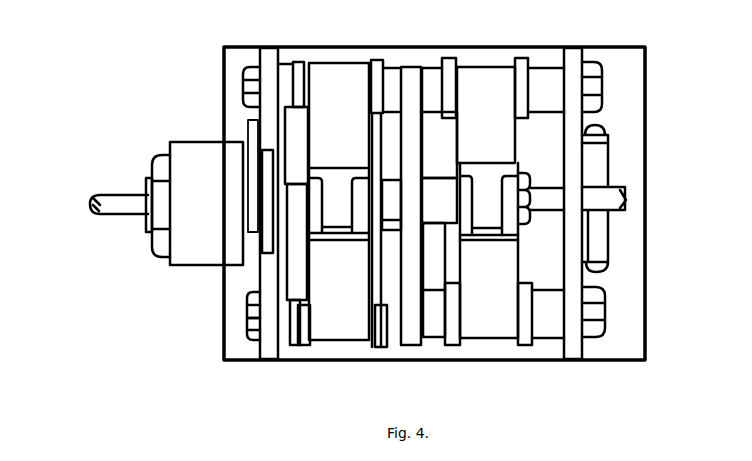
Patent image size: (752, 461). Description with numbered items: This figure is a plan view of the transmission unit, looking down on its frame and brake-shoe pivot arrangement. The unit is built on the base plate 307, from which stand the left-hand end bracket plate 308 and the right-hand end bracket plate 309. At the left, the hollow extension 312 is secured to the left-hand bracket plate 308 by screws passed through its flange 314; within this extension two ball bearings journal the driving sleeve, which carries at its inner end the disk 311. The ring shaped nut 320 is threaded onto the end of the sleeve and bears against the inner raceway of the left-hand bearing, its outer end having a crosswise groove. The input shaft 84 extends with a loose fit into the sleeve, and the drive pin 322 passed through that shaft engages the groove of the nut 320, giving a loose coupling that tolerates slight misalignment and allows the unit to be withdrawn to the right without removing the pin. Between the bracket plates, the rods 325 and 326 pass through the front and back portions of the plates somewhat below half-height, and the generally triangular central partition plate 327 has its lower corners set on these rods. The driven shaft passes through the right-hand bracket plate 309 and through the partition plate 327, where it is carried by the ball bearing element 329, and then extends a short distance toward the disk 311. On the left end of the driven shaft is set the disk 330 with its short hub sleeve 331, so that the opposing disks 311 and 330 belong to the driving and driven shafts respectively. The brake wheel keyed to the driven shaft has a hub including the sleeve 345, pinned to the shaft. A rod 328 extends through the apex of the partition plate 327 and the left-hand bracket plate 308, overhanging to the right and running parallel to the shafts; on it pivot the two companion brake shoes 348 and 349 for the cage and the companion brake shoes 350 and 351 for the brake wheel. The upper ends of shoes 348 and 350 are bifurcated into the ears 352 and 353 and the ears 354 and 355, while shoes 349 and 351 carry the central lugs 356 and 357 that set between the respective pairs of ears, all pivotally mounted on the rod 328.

The input shaft 84 is at (97, 210).
The base plate 307 is at (630, 137).
The left-hand end bracket plate 308 is at (268, 322).
The right-hand end bracket plate 309 is at (577, 322).
The disk 311 is at (296, 128).
The hollow extension 312 is at (214, 192).
The flange 314 is at (247, 133).
The ring shaped nut 320 is at (163, 248).
The drive pin 322 is at (144, 222).
The rod 325 is at (250, 314).
The rod 326 is at (602, 87).
The central partition plate 327 is at (404, 77).
The rod 328 is at (249, 228).
The ball bearing element 329 is at (439, 123).
The disk 330 is at (374, 128).
The short hub sleeve 331 is at (386, 177).
The sleeve 345 is at (439, 257).
The brake shoe 348 is at (344, 330).
The brake shoe 349 is at (334, 78).
The brake shoe 350 is at (490, 330).
The brake shoe 351 is at (471, 80).
The ear 352 is at (315, 222).
The ear 353 is at (363, 220).
The ear 354 is at (466, 223).
The ear 355 is at (508, 223).
The central lug 356 is at (339, 204).
The central lug 357 is at (489, 201).